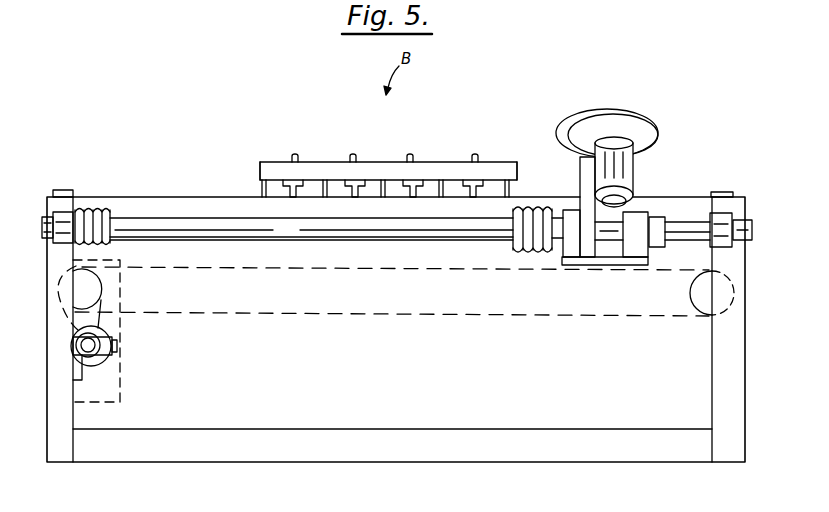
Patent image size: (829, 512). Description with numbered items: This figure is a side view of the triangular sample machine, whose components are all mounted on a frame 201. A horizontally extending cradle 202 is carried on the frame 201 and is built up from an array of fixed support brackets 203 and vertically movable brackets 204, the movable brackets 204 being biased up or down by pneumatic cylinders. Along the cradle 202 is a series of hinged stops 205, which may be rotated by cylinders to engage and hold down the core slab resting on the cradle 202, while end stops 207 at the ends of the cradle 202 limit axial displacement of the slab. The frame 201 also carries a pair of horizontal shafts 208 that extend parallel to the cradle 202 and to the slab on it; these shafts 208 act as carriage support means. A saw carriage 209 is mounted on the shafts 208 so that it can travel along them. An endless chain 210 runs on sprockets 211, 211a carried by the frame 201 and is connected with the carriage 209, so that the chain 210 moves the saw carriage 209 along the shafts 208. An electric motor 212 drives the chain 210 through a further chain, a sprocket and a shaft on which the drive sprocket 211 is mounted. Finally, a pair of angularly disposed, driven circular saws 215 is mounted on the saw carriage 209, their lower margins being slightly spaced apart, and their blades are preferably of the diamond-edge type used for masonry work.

The frame 201 is at (70, 421).
The cradle 202 is at (445, 163).
The fixed support brackets 203 is at (518, 183).
The vertically movable brackets 204 is at (263, 186).
The hinged stops 205 is at (295, 154).
The end stops 207 is at (261, 164).
The horizontal shafts 208 is at (150, 228).
The saw carriage 209 is at (620, 231).
The endless chain 210 is at (327, 313).
The drive sprocket 211 is at (98, 292).
The sprocket 211a is at (693, 289).
The electric motor 212 is at (117, 346).
The circular saws 215 is at (566, 119).